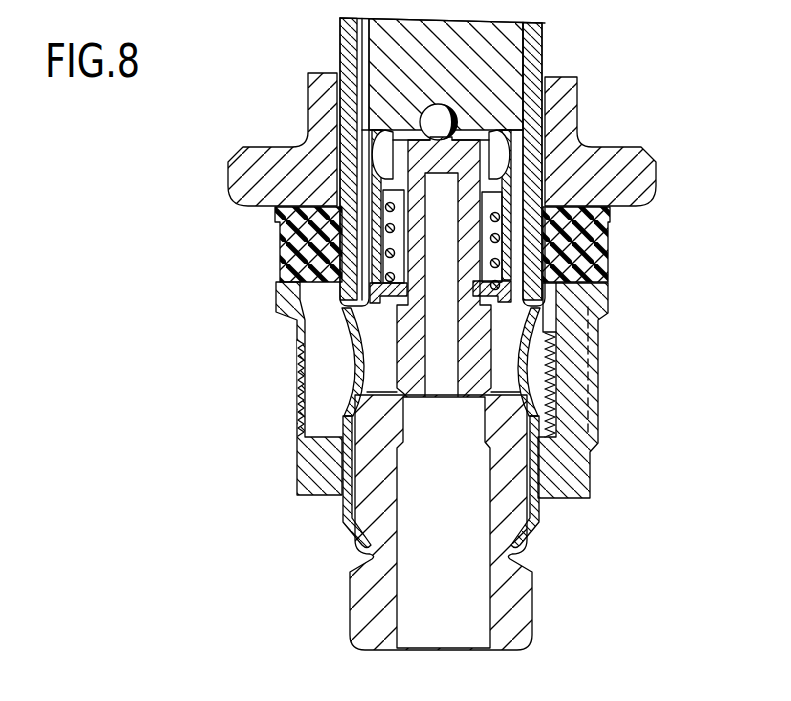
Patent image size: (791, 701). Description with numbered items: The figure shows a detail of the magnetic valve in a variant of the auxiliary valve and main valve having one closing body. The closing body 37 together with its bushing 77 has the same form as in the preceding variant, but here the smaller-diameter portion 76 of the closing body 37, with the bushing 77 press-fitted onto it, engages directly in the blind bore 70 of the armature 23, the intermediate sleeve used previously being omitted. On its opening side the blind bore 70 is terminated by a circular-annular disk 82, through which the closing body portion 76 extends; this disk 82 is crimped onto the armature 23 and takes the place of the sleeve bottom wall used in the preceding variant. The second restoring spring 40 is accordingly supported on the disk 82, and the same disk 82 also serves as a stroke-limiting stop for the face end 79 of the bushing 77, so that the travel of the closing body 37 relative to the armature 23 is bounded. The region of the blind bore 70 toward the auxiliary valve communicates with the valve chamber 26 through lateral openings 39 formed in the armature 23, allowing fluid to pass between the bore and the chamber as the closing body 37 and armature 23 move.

The armature 23 is at (505, 80).
The lateral openings 39 is at (375, 153).
The blind bore 70 is at (487, 167).
The bushing 77 is at (450, 238).
The smaller-diameter portion 76 is at (465, 224).
The second restoring spring 40 is at (555, 262).
The face end 79 is at (500, 280).
The circular-annular disk 82 is at (535, 320).
The valve chamber 26 is at (370, 330).
The closing body 37 is at (380, 356).